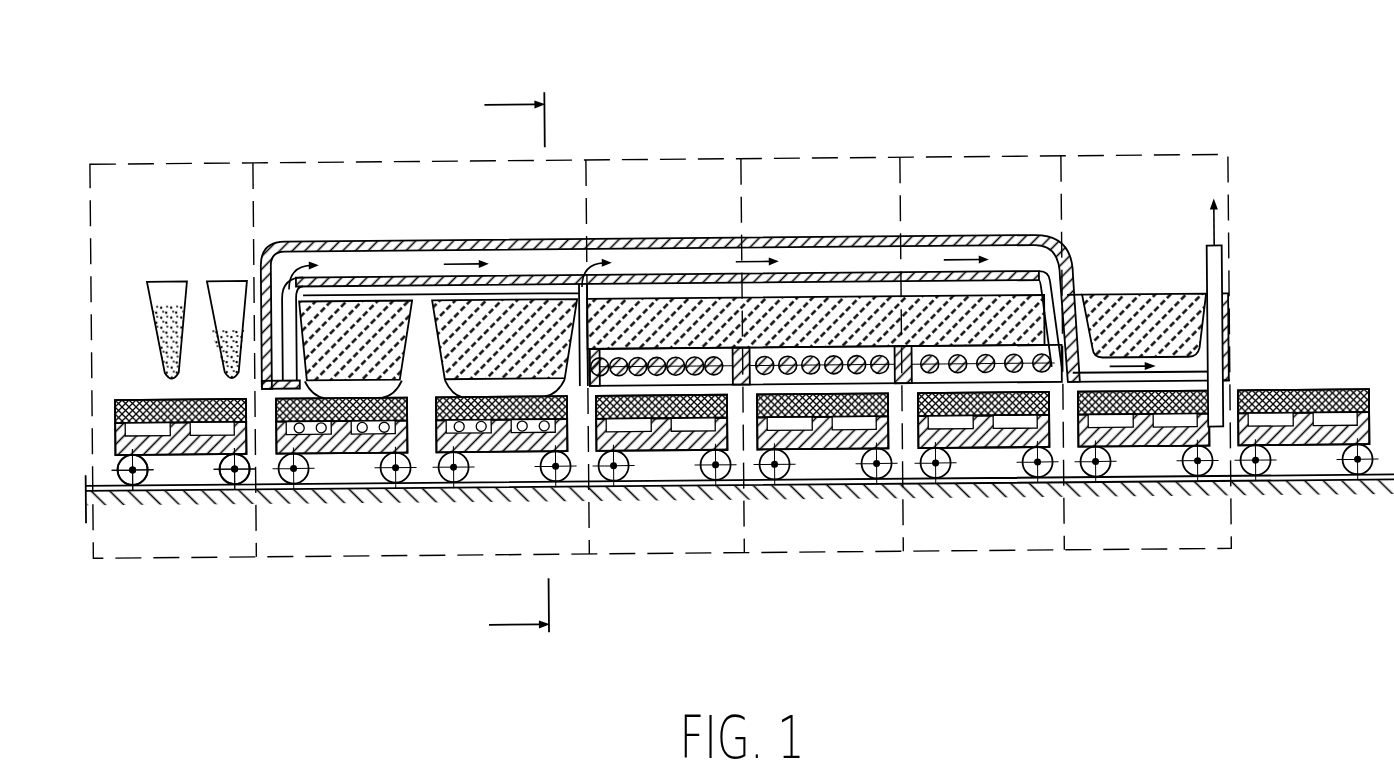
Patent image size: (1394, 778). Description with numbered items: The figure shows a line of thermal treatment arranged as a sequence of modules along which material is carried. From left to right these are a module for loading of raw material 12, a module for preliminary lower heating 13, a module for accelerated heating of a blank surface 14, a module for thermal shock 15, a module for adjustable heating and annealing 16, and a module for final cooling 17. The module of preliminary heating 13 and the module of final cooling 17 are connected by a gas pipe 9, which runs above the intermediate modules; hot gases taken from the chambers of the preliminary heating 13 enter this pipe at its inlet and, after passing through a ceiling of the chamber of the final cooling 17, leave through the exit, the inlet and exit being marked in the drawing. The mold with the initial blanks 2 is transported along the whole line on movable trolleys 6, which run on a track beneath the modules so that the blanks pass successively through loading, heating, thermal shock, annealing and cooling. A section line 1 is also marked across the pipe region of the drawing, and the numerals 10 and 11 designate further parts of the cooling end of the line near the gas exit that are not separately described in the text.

The section line 1- 1 is at (515, 363).
The mold with the initial blanks 2 is at (1302, 448).
The movable trolleys 6 is at (132, 466).
The gas pipe 9 is at (358, 237).
The discharge channel 10 is at (1167, 366).
The exhaust pipe 11 is at (1215, 284).
The module for loading of raw material 12 is at (173, 207).
The module for preliminary lower heating 13 is at (448, 198).
The module for accelerated heating of a blank surface 14 is at (643, 207).
The module for thermal shock 15 is at (810, 208).
The module for adjustable heating and annealing 16 is at (948, 204).
The module for final cooling 17 is at (1229, 224).